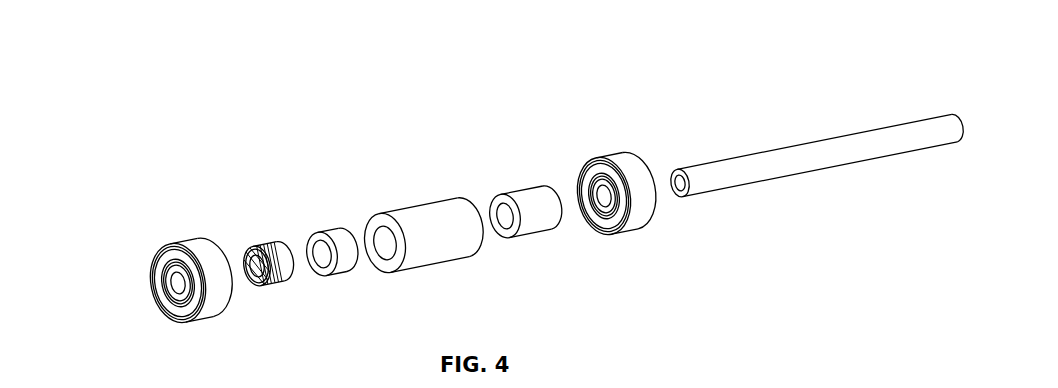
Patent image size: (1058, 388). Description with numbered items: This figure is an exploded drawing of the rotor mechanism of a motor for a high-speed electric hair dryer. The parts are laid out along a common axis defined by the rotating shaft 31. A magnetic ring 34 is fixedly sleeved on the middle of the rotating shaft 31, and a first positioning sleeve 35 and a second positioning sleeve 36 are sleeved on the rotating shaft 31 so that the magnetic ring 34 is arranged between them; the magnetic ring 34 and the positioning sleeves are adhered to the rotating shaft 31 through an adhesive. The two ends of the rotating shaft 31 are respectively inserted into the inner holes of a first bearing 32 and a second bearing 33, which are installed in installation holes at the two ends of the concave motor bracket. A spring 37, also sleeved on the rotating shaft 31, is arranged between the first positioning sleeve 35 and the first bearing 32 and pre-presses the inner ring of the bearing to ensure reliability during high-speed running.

The rotating shaft 31 is at (815, 112).
The first bearing 32 is at (138, 224).
The second bearing 33 is at (575, 141).
The magnetic ring 34 is at (390, 179).
The first positioning sleeve 35 is at (279, 193).
The second positioning sleeve 36 is at (480, 160).
The spring 37 is at (234, 209).